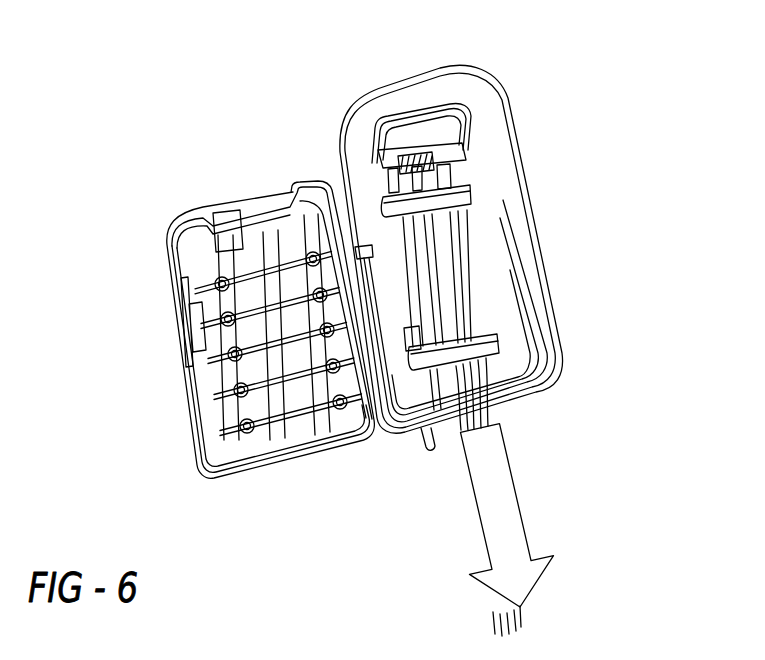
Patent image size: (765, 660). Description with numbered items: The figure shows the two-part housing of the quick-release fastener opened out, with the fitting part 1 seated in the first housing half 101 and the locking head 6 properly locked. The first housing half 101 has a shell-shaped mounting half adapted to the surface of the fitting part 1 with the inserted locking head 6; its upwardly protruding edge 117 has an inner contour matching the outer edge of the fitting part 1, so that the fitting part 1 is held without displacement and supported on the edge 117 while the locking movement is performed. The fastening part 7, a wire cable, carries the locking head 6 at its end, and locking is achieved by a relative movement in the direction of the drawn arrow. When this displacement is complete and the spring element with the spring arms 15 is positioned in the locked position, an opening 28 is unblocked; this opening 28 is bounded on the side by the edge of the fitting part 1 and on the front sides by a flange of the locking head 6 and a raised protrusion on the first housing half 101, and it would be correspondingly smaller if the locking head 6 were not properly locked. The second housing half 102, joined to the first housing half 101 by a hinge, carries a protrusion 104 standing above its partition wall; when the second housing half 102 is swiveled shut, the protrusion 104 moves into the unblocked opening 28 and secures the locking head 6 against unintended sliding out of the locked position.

The fitting part 1 is at (487, 132).
The locking head 6 is at (447, 263).
The fastening part 7 is at (490, 610).
The spring arms 15 is at (483, 320).
The opening 28 is at (466, 168).
The first housing half 101 is at (562, 364).
The second housing half 102 is at (197, 425).
The protrusion 104 is at (240, 203).
The edge 117 is at (425, 430).